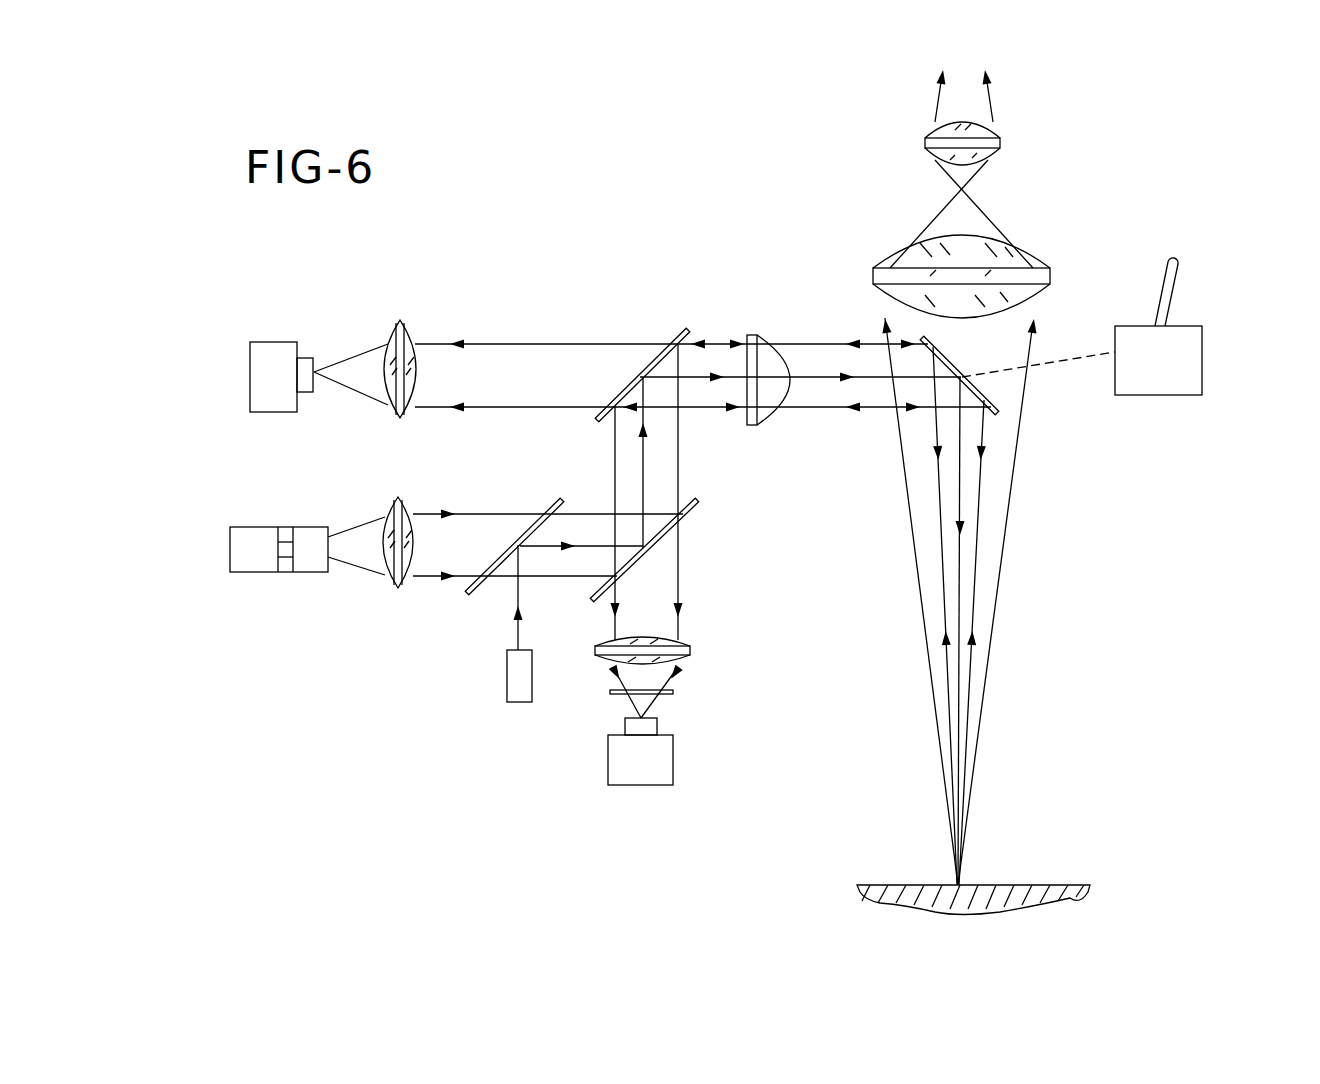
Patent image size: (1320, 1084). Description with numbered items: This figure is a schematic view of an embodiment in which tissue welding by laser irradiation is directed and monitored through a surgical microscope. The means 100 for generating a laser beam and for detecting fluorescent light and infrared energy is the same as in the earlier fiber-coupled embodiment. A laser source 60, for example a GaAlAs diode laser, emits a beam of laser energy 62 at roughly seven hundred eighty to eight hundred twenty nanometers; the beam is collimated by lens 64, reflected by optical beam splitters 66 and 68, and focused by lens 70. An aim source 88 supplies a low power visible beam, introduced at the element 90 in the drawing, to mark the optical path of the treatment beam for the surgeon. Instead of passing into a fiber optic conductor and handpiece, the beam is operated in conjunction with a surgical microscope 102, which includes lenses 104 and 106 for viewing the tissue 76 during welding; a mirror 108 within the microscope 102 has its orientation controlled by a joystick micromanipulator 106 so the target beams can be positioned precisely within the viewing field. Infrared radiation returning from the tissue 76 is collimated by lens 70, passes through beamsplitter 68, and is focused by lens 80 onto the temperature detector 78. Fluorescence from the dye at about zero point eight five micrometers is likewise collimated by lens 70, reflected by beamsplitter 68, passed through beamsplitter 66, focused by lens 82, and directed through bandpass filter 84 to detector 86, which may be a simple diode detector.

The laser source 60 is at (230, 540).
The beam of laser energy 62 is at (362, 556).
The lens 64 is at (398, 500).
The optical beam splitter 66 is at (697, 502).
The optical beam splitter 68 is at (686, 328).
The lens 70 is at (752, 425).
The tissue 76 is at (1073, 895).
The temperature detector 78 is at (277, 342).
The lens 80 is at (402, 322).
The lens 82 is at (690, 650).
The filter 84 is at (675, 692).
The detector 86 is at (668, 762).
The aim source 88 is at (507, 668).
The beam splitter 90 is at (562, 500).
The means for generating a laser beam and detecting fluorescent light and infrared e 100 is at (536, 452).
The surgical microscope 102 is at (1052, 430).
The lens 104 is at (1050, 280).
The lens / joystick micromanipulator 106 is at (1000, 143).
The mirror 108 is at (943, 345).